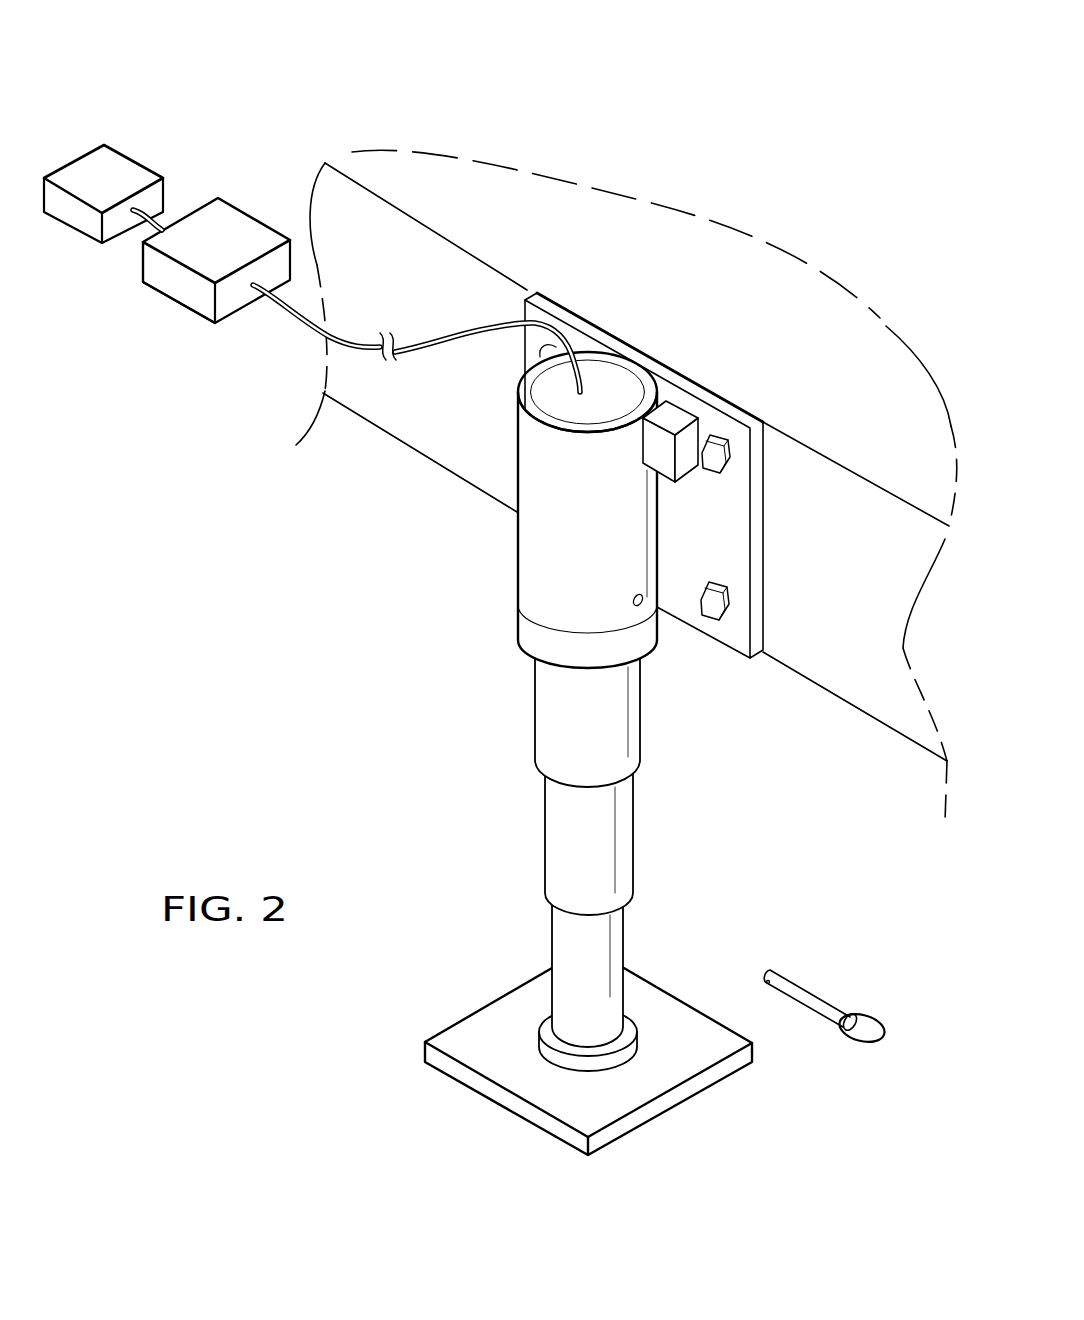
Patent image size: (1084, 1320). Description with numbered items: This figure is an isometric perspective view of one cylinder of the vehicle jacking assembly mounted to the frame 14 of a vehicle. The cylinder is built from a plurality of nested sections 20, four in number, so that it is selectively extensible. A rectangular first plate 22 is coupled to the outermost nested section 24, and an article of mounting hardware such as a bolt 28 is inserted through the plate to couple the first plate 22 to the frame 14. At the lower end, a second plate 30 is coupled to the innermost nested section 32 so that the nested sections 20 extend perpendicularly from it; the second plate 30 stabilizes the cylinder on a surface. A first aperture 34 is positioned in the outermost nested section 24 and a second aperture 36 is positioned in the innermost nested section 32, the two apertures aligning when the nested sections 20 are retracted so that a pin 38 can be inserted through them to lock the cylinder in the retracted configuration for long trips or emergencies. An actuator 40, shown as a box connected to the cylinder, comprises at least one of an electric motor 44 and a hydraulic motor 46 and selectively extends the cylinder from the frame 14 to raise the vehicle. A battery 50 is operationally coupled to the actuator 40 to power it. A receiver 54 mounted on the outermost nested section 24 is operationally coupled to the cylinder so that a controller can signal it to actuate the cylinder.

The frame 14 is at (401, 432).
The nested sections 20 is at (552, 923).
The first plate 22 is at (763, 468).
The outermost nested section 24 is at (517, 570).
The bolt 28 is at (720, 437).
The second plate 30 is at (647, 1120).
The innermost nested section 32 is at (552, 952).
The first aperture 34 is at (640, 605).
The second aperture 36 is at (618, 1013).
The pin 38 is at (815, 1003).
The actuator 40 is at (257, 215).
The electric motor 44 is at (165, 283).
The hydraulic motor 46 is at (195, 297).
The battery 50 is at (104, 145).
The receiver 54 is at (660, 440).